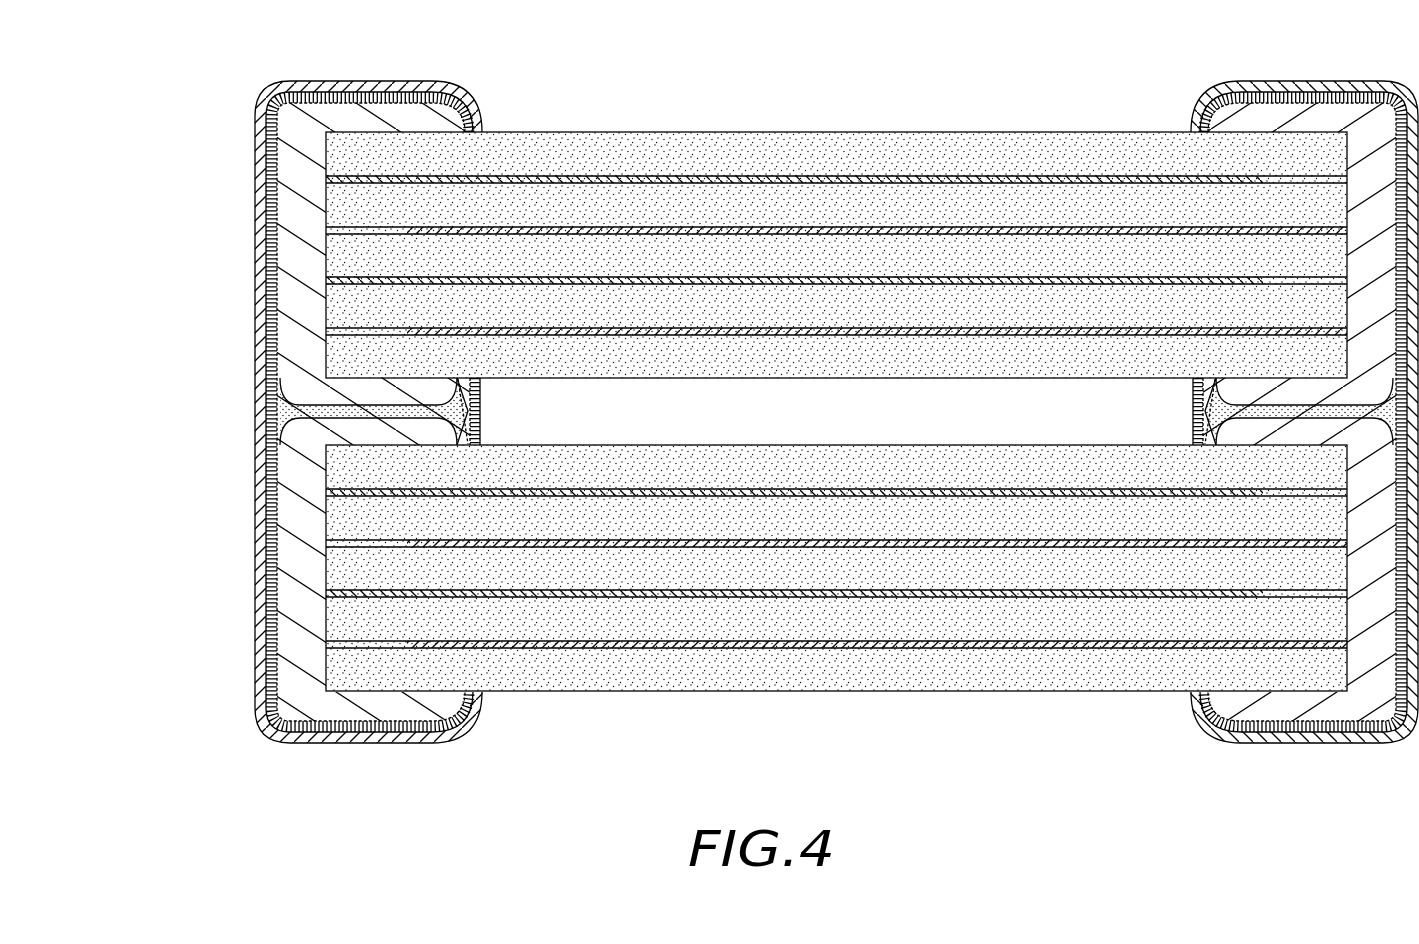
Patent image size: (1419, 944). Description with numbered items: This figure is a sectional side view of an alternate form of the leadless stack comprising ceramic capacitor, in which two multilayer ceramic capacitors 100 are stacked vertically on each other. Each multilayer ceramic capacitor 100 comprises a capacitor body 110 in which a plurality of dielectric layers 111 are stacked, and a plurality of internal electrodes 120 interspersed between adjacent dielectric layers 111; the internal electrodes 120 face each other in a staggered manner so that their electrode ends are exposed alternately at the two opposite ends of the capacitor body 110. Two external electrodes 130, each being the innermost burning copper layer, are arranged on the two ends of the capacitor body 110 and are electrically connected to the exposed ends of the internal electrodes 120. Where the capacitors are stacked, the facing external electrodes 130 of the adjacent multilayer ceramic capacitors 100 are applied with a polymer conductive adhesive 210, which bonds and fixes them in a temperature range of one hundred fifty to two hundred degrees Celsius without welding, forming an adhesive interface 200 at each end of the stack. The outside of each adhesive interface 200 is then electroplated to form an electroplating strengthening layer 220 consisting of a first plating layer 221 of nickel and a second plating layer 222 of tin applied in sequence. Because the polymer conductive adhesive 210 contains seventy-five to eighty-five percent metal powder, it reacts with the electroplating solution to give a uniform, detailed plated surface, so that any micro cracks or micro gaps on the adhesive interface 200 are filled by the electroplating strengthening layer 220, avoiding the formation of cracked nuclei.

The multilayer ceramic capacitor 100 is at (836, 412).
The capacitor body 110 is at (836, 407).
The dielectric layer 111 is at (678, 205).
The internal electrode 120 is at (612, 228).
The external electrode 130 is at (1287, 118).
The adhesive interface 200 is at (739, 411).
The polymer conductive adhesive 210 is at (290, 409).
The electroplating strengthening layer 220 is at (752, 412).
The first plating layer 221 is at (276, 265).
The second plating layer 222 is at (258, 223).